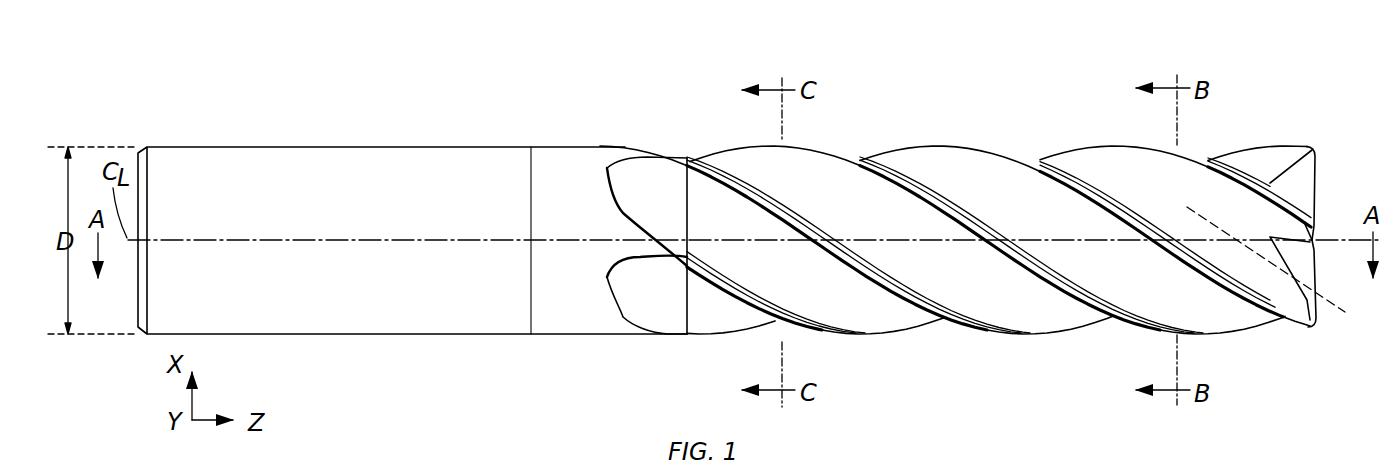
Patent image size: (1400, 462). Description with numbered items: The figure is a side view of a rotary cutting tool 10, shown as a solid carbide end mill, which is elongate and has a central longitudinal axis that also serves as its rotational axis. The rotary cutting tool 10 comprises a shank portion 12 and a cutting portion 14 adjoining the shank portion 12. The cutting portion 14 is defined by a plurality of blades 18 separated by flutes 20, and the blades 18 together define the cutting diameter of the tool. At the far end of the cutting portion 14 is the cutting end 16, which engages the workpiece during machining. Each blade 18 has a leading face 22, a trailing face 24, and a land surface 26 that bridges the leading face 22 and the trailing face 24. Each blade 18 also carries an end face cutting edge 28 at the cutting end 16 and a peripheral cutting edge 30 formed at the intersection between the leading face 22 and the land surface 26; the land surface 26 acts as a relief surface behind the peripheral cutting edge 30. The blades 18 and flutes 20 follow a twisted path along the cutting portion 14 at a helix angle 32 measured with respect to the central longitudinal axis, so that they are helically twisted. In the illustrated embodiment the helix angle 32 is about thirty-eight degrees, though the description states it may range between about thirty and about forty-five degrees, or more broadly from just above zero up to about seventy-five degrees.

The rotary cutting tool 10 is at (348, 103).
The shank portion 12 is at (277, 137).
The cutting portion 14 is at (977, 100).
The cutting end 16 is at (1353, 187).
The blade 18 is at (706, 153).
The flute 20 is at (696, 212).
The leading face 22 is at (1281, 153).
The trailing face 24 is at (1205, 197).
The land surface 26 is at (881, 167).
The end face cutting edge 28 is at (1323, 179).
The peripheral cutting edge 30 is at (1255, 144).
The helix angle 32 is at (1343, 249).